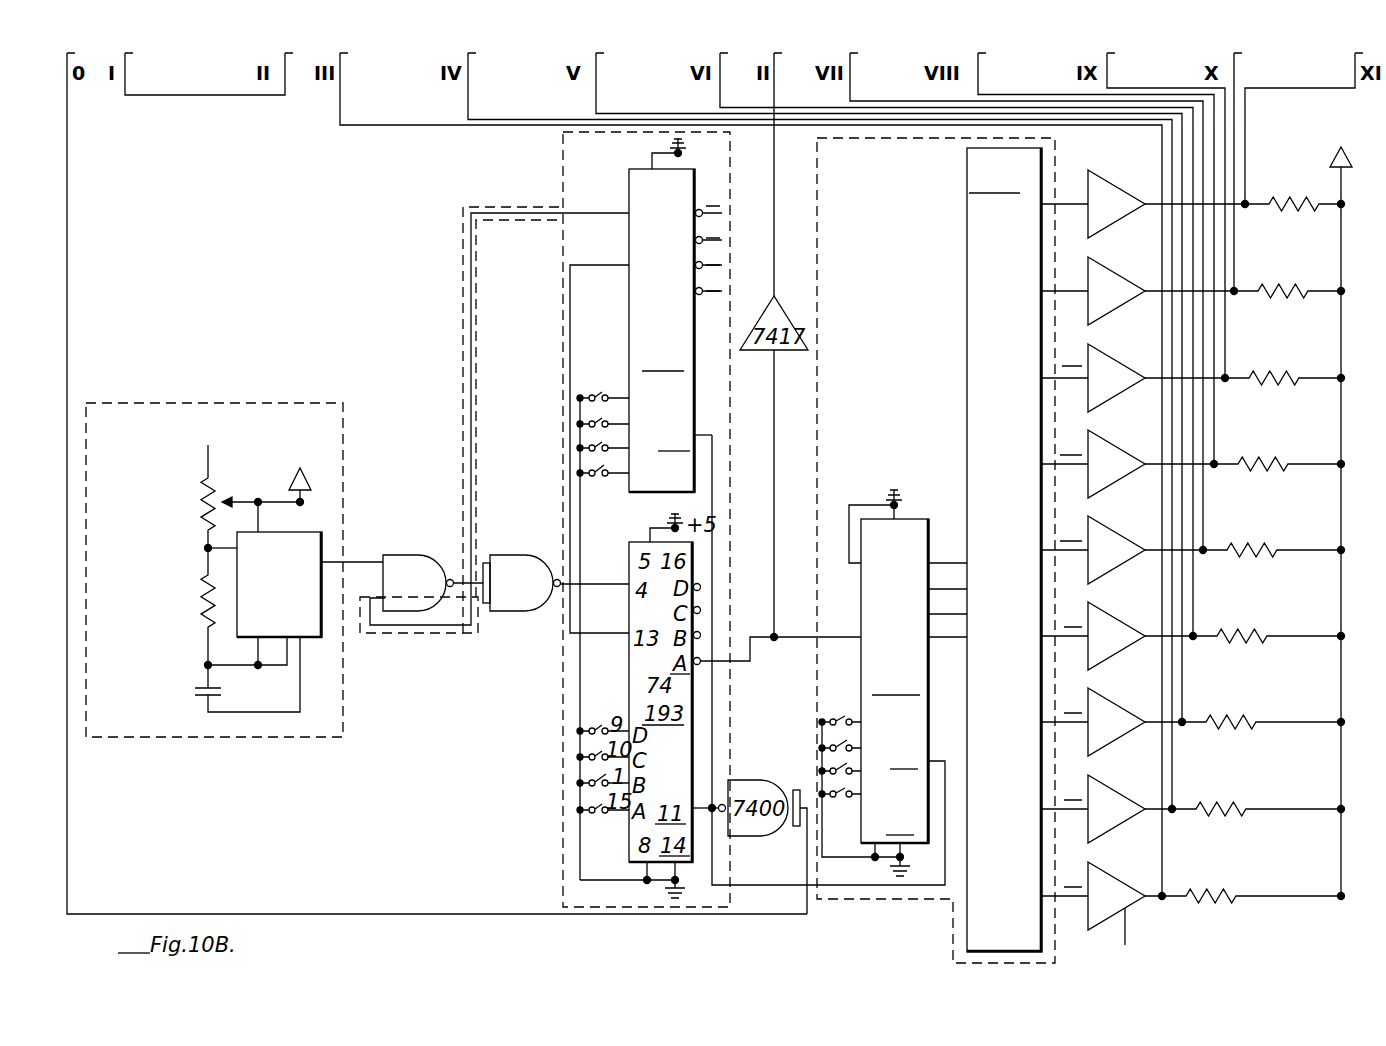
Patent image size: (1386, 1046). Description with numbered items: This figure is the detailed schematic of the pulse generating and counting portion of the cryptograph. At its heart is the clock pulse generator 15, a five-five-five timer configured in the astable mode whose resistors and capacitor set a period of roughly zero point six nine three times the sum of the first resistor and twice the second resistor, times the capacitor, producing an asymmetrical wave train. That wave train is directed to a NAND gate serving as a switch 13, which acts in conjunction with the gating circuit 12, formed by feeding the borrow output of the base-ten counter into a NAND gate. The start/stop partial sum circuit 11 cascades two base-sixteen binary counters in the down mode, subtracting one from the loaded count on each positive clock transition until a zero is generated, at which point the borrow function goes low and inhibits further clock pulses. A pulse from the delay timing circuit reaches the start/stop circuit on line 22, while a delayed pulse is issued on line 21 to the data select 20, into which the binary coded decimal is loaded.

The start/stop partial sum circuit 11 is at (765, 195).
The gating circuit 12 is at (463, 343).
The switch 13 is at (444, 541).
The clock pulse generator 15 is at (343, 718).
The data select 20 is at (817, 275).
The line 21 is at (806, 617).
The line 22 is at (67, 298).